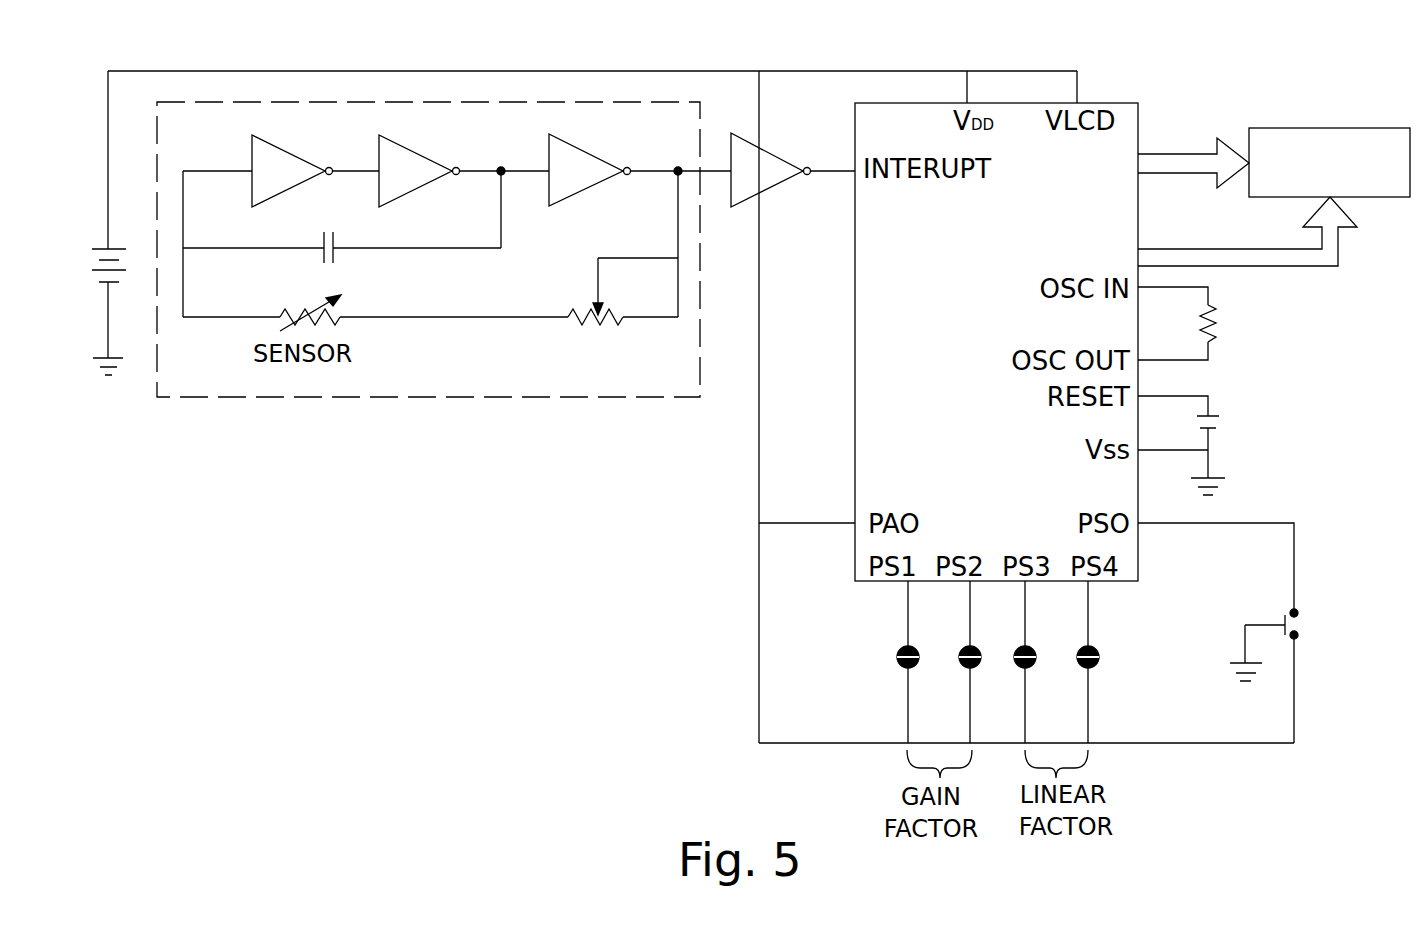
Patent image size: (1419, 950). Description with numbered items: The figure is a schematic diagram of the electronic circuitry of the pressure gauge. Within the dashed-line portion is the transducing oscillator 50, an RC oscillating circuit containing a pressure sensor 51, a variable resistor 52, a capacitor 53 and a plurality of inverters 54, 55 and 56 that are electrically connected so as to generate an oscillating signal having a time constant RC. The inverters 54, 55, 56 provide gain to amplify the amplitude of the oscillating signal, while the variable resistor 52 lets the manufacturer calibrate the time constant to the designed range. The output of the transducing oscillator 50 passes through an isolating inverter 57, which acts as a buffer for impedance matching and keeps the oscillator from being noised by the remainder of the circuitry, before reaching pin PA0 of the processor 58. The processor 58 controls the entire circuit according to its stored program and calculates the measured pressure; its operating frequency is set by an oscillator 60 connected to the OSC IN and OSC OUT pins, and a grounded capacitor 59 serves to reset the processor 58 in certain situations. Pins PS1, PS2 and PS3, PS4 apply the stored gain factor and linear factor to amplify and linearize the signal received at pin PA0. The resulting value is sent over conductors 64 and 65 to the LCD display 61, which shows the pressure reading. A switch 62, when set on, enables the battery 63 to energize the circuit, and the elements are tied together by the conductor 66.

The transducing oscillator 50 is at (456, 410).
The pressure sensor 51 is at (346, 303).
The variable resistor 52 is at (587, 303).
The capacitor 53 is at (337, 238).
The inverter 54 is at (302, 157).
The inverter 55 is at (430, 157).
The inverter 56 is at (600, 157).
The isolating inverter 57 is at (770, 146).
The processor 58 is at (1117, 600).
The capacitor 59 is at (1215, 423).
The oscillator 60 is at (1215, 317).
The LCD display 61 is at (1313, 128).
The switch 62 is at (1300, 628).
The battery 63 is at (100, 240).
The conductor 64 is at (1166, 153).
The conductor 65 is at (1165, 248).
The conductor 66 is at (493, 71).